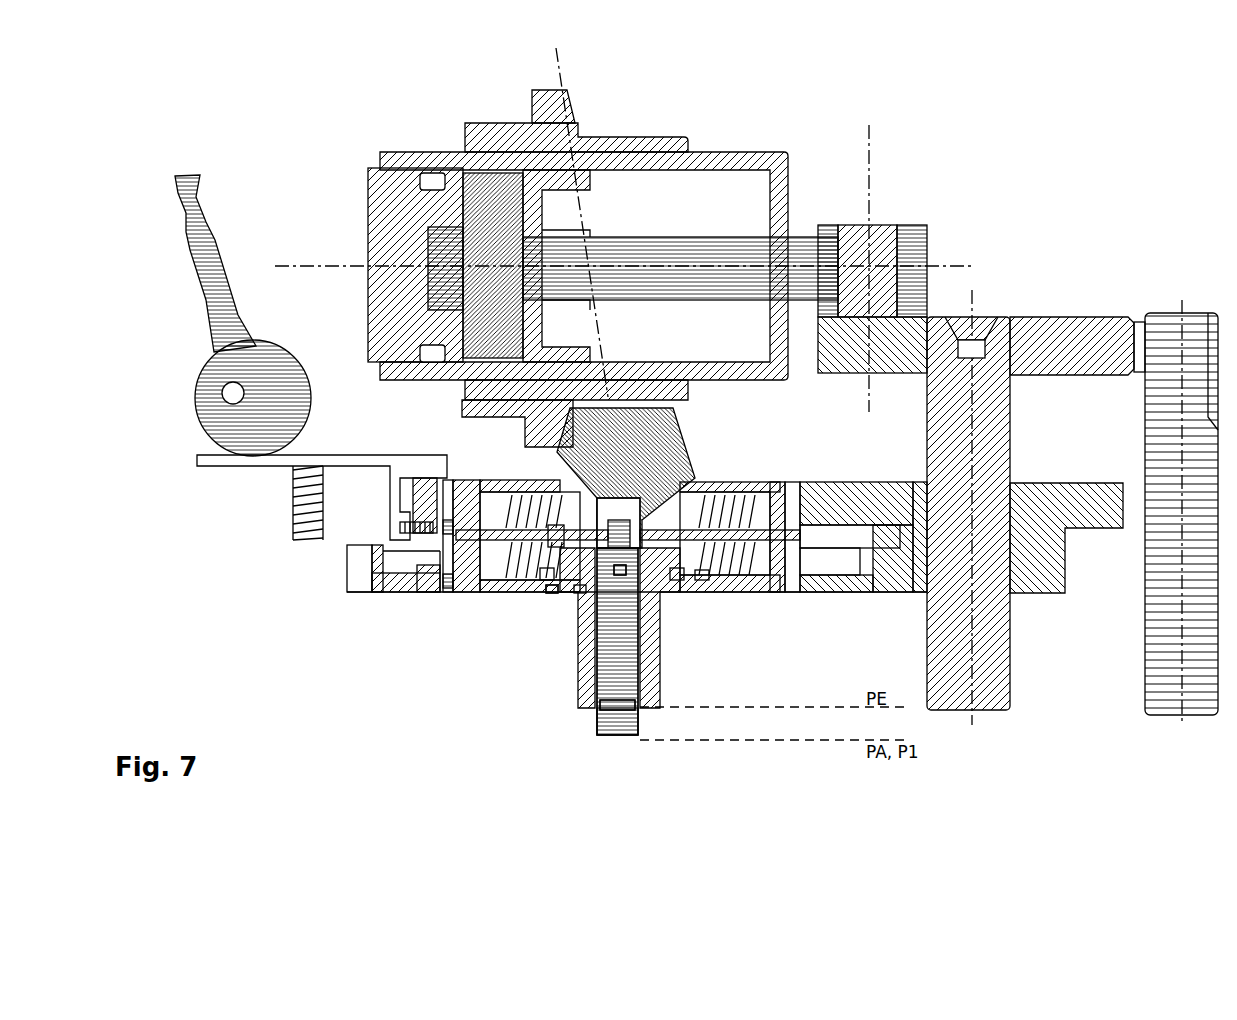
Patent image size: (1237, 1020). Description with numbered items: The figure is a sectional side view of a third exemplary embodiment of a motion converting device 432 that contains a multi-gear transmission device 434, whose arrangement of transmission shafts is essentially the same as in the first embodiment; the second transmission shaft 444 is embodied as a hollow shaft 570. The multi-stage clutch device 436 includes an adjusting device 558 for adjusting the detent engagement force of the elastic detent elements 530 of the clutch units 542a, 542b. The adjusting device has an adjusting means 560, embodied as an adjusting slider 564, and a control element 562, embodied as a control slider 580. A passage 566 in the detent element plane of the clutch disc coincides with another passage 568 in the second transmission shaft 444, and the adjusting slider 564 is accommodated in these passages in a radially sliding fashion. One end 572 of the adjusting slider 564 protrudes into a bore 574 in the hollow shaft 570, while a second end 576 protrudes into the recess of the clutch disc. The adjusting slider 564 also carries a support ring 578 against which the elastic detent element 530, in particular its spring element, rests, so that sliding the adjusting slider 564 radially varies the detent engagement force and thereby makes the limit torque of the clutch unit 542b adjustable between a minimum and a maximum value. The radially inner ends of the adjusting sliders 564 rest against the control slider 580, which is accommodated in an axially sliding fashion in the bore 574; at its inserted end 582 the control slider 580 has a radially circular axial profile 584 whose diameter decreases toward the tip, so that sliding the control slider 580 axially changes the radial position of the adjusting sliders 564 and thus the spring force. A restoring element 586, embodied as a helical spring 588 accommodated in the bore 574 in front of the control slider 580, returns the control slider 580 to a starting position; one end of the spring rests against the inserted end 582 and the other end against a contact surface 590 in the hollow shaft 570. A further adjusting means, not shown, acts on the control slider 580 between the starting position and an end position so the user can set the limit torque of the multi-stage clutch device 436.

The motion converting device 432 is at (997, 165).
The multi-gear transmission device 434 is at (803, 412).
The multi-stage clutch device 436 is at (352, 680).
The second transmission shaft 444 is at (584, 692).
The elastic detent element 530 is at (702, 578).
The clutch unit 542a is at (458, 527).
The clutch unit 542b is at (458, 582).
The adjusting device 558 is at (586, 727).
The adjusting means 560 is at (552, 592).
The control element 562 is at (613, 708).
The adjusting slider 564 is at (552, 592).
The passage 566 is at (677, 573).
The passage 568 is at (655, 535).
The hollow shaft 570 is at (584, 692).
The end of adjusting slider 572 is at (580, 592).
The bore 574 is at (598, 522).
The second end of adjusting slider 576 is at (588, 560).
The support ring 578 is at (545, 578).
The control slider 580 is at (613, 708).
The end of control slider 582 is at (620, 570).
The radially circular axial profile 584 is at (620, 570).
The restoring element 586 is at (614, 496).
The helical spring 588 is at (614, 496).
The contact surface 590 is at (612, 500).